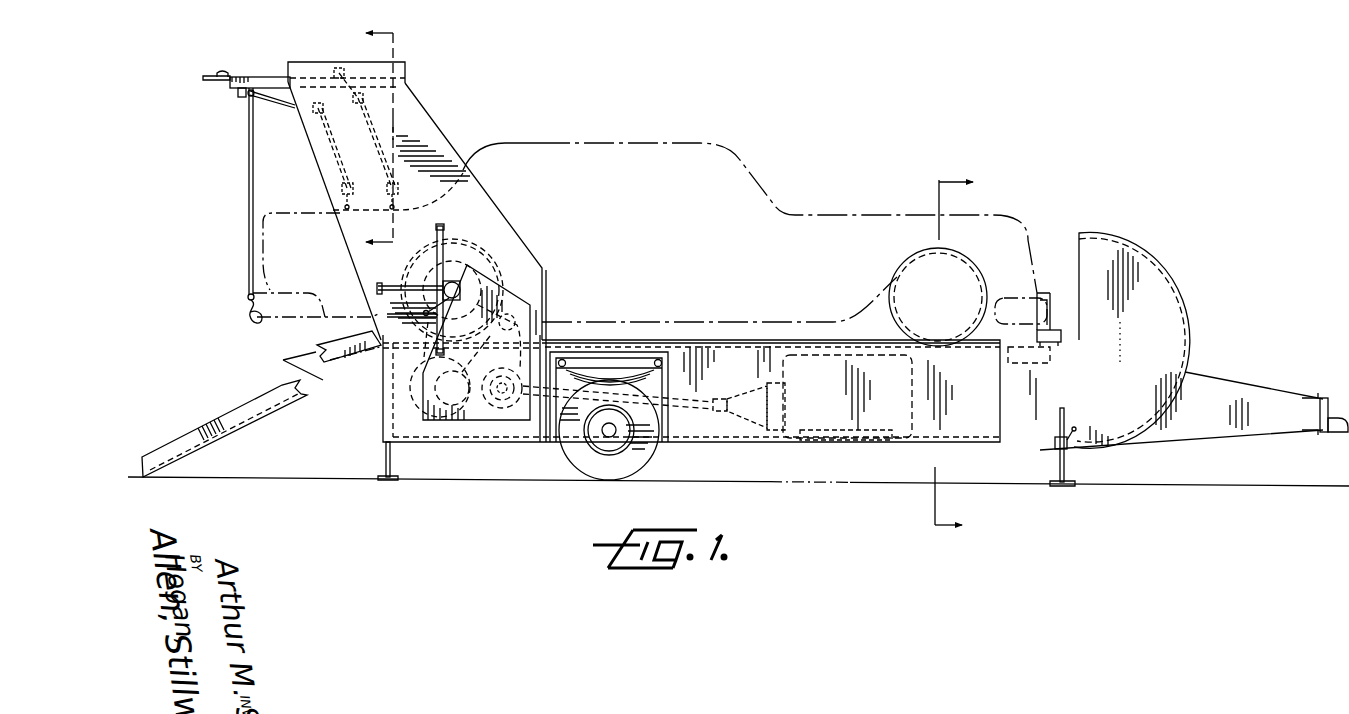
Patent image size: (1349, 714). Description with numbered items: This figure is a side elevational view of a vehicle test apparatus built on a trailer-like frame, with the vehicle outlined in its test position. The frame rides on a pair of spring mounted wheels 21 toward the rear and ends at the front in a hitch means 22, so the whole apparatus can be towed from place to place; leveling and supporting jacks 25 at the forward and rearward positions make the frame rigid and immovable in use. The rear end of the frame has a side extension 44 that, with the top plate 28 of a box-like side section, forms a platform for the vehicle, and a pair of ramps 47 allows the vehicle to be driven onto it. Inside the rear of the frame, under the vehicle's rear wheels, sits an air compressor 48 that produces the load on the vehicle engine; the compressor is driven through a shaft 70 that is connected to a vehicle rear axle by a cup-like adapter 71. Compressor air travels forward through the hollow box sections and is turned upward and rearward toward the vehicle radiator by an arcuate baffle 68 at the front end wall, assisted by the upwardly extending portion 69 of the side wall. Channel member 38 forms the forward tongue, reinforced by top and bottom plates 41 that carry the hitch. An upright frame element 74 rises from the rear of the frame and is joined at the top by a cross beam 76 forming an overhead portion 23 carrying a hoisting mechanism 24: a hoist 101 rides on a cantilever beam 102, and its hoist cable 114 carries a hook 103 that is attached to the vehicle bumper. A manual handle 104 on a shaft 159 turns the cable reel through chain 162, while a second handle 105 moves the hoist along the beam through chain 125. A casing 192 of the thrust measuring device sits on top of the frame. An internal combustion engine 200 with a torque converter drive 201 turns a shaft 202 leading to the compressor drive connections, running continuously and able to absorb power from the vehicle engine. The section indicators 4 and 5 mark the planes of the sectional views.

The cross beam 76 is at (332, 61).
The overhead portion 23 is at (432, 81).
The upright frame element 74 is at (457, 140).
The chain 125 is at (398, 128).
The section line 5- 5 is at (395, 138).
The section line 4- 4 is at (937, 357).
The cantilever beam 102 is at (215, 92).
The hoist 101 is at (247, 100).
The hoist cable 114 is at (249, 184).
The hook 103 is at (246, 322).
The hoisting mechanism 24 is at (250, 230).
The chain 162 is at (320, 156).
The shaft 159 is at (370, 143).
The manual handle 104 is at (344, 207).
The manual handle 105 is at (398, 191).
The shaft 70 is at (453, 284).
The cup-like adapter 71 is at (481, 250).
The side extension 44 is at (546, 312).
The air compressor 48 is at (393, 408).
The ramp 47 is at (238, 406).
The leveling and supporting jack 25 is at (383, 455).
The spring mounted wheel 21 is at (562, 453).
The shaft 202 is at (707, 397).
The torque converter drive 201 is at (753, 420).
The internal combustion engine 200 is at (914, 396).
The top plate 28 is at (835, 342).
The casing 192 is at (1072, 336).
The arcuate baffle 68 is at (1185, 315).
The upwardly extending portion 69 is at (1150, 276).
The channel member 38 is at (1209, 433).
The top and bottom plates 41 is at (1310, 393).
The hitch means 22 is at (1338, 416).